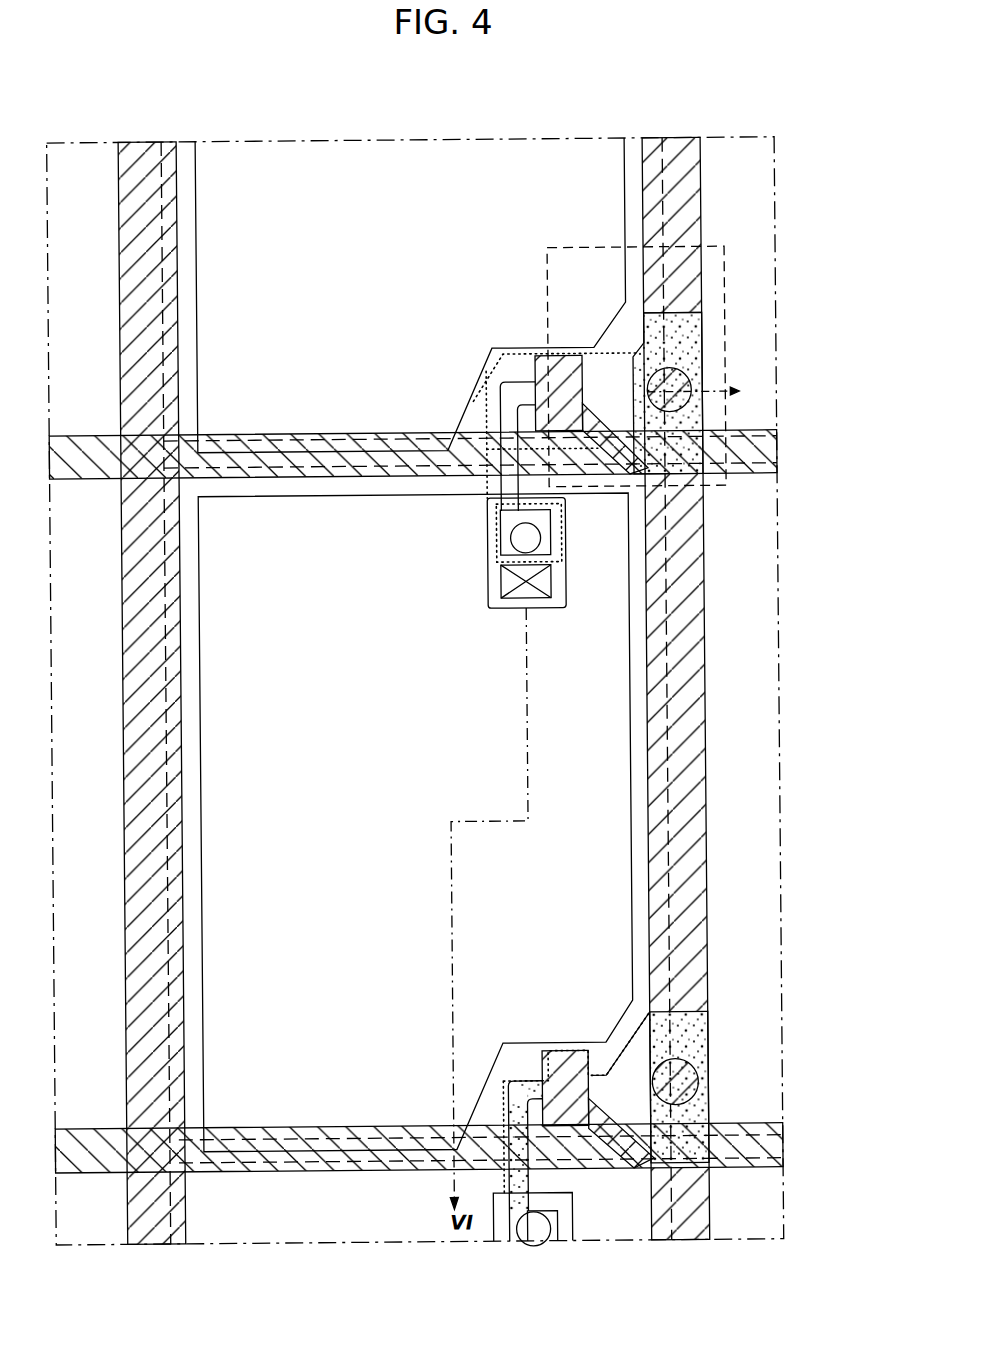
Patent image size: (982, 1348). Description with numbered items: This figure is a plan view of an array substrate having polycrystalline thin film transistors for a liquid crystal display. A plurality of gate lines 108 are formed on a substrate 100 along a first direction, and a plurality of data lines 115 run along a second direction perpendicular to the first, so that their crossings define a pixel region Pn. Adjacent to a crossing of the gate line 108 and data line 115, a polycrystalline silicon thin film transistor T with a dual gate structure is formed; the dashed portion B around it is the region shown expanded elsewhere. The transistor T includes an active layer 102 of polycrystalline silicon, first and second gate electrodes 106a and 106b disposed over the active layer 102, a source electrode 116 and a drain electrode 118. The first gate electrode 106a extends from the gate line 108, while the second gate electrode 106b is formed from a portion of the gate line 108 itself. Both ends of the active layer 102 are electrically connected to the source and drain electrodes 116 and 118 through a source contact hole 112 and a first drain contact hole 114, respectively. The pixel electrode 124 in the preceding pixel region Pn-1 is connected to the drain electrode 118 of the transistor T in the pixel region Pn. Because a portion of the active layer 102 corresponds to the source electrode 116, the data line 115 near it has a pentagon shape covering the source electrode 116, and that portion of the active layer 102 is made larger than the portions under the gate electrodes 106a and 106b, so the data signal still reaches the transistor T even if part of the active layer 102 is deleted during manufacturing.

The substrate 100 is at (781, 888).
The active layer 102 is at (706, 331).
The first gate electrode 106a is at (543, 356).
The second gate electrode 106b is at (488, 397).
The gate line 108 is at (92, 477).
The source contact hole 112 is at (703, 391).
The first drain contact hole 114 is at (505, 536).
The data line 115 is at (710, 608).
The source electrode 116 is at (618, 480).
The drain electrode 118 is at (489, 593).
The pixel electrode 124 is at (632, 744).
The pixel region Pn is at (668, 218).
The (n-1)th pixel region Pn-1 is at (668, 670).
The portion B is at (728, 270).
The polycrystalline silicon thin film transistor T is at (708, 358).